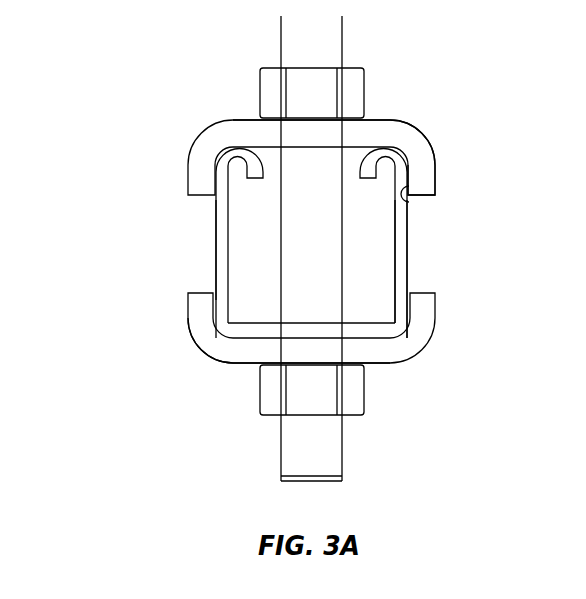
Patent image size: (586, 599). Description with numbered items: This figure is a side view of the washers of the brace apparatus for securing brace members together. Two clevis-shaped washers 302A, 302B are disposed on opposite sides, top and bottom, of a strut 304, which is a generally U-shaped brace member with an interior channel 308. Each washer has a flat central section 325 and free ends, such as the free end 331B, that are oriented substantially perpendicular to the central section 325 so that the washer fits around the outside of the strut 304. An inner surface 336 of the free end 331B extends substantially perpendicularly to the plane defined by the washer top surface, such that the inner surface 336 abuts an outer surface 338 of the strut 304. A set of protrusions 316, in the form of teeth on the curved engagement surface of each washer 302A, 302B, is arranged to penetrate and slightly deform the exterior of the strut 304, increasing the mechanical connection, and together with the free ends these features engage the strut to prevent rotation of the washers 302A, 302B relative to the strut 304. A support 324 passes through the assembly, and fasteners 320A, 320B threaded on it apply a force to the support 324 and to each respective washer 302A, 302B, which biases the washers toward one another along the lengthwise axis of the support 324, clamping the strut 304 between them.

The washer 302A is at (175, 160).
The washer 302B is at (423, 310).
The strut 304 is at (205, 246).
The interior channel 308 is at (238, 219).
The set of protrusions 316 is at (423, 146).
The fastener 320A is at (272, 91).
The fastener 320B is at (246, 402).
The support 324 is at (267, 459).
The flat central section 325 is at (375, 127).
The free end 331B is at (438, 170).
The inner surface 336 is at (409, 194).
The outer surface 338 is at (409, 228).